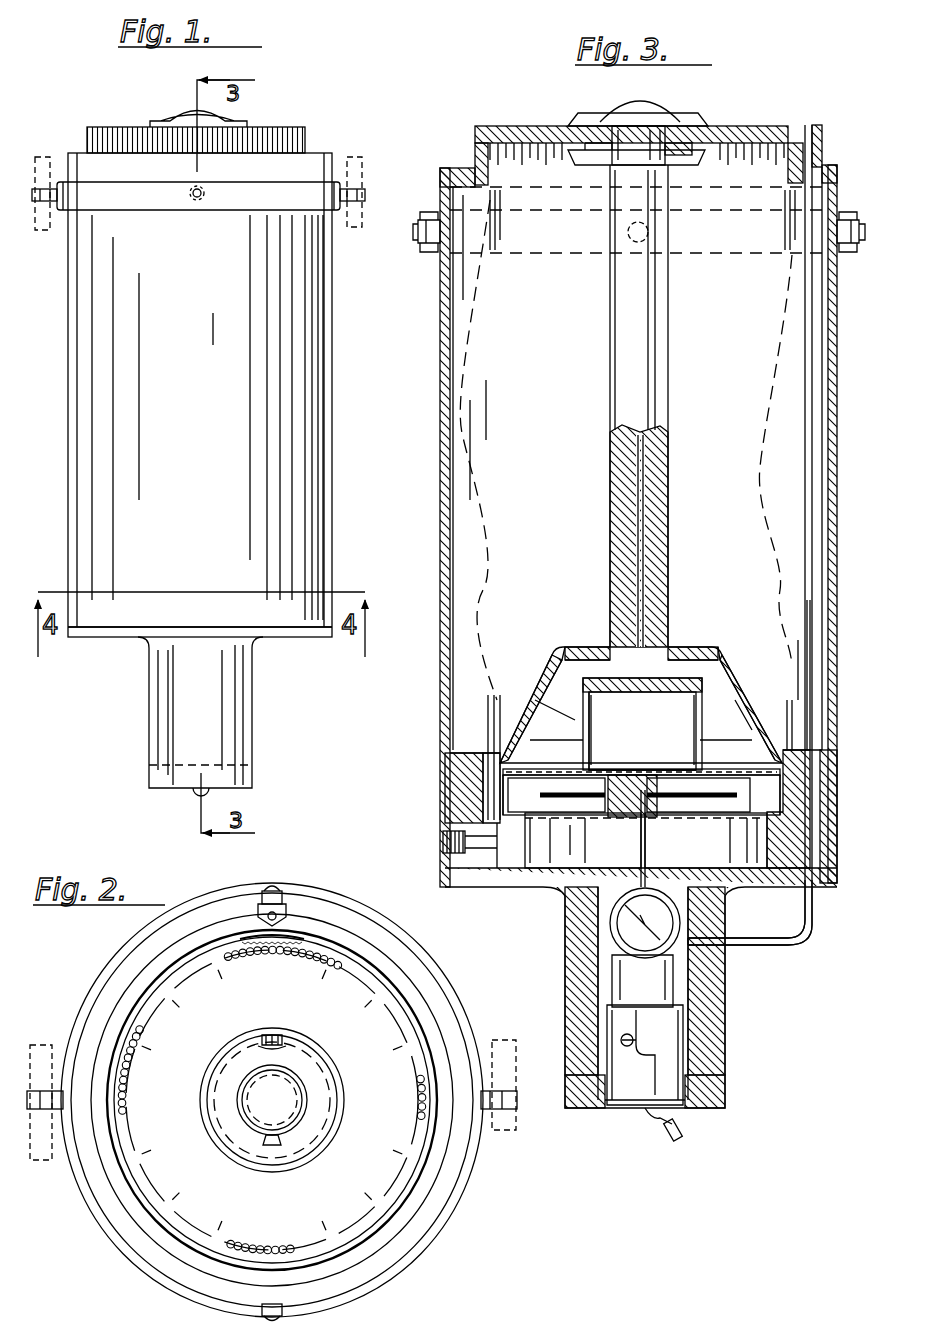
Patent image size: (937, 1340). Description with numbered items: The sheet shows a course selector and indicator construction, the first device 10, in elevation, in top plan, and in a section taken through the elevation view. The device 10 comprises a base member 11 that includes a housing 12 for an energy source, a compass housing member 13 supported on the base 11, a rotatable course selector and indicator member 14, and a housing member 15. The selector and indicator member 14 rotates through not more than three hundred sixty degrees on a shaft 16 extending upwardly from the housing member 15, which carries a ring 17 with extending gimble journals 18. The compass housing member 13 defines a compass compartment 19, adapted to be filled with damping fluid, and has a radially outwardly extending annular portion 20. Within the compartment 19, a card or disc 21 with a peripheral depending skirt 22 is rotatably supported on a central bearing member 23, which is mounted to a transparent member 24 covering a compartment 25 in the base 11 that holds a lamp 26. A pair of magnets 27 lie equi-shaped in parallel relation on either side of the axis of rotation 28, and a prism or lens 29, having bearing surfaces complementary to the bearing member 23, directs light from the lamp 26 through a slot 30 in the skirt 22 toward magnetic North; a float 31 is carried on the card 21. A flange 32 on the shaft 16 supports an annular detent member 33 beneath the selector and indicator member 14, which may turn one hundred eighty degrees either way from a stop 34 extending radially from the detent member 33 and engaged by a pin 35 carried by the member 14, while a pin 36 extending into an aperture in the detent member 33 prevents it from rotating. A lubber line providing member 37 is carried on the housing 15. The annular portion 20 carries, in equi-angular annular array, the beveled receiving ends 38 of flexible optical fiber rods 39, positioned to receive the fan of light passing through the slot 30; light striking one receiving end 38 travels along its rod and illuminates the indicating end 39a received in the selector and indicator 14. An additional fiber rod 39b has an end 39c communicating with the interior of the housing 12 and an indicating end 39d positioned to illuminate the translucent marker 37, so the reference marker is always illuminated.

In FIG. 1, the first device 10 is at (339, 124).
In FIG. 2, the first device 10 is at (104, 940).
In FIG. 3, the first device 10 is at (824, 108).
In FIG. 1, the base member 11 is at (130, 610).
In FIG. 3, the base member 11 is at (455, 778).
In FIG. 1, the housing for an energy source 12 is at (168, 705).
In FIG. 3, the housing for an energy source 12 is at (710, 998).
In FIG. 3, the compass housing member 13 is at (718, 652).
In FIG. 1, the rotatable course selector and indicator member 14 is at (272, 138).
In FIG. 2, the rotatable course selector and indicator member 14 is at (237, 1031).
In FIG. 3, the rotatable course selector and indicator member 14 is at (758, 128).
In FIG. 1, the housing member 15 is at (68, 375).
In FIG. 2, the housing member 15 is at (130, 1222).
In FIG. 3, the housing member 15 is at (445, 452).
In FIG. 3, the shaft 16 is at (640, 386).
In FIG. 1, the ring 17 is at (234, 202).
In FIG. 2, the ring 17 is at (100, 980).
In FIG. 3, the ring 17 is at (430, 252).
In FIG. 1, the gimble journals 18 is at (43, 189).
In FIG. 2, the gimble journals 18 is at (45, 1090).
In FIG. 3, the gimble journals 18 is at (632, 242).
In FIG. 3, the compass compartment 19 is at (712, 700).
In FIG. 3, the radially outwardly extending annular portion 20 is at (468, 752).
In FIG. 3, the card or disc 21 is at (523, 787).
In FIG. 3, the peripheral depending skirt 22 is at (552, 780).
In FIG. 3, the central bearing member 23 is at (647, 832).
In FIG. 3, the transparent member 24 is at (612, 873).
In FIG. 3, the compartment for a source of light energy 25 is at (603, 951).
In FIG. 3, the lamp 26 is at (663, 940).
In FIG. 3, the magnets 27 is at (641, 764).
In FIG. 3, the axis of rotation 28 is at (687, 778).
In FIG. 3, the prism or lens 29 is at (630, 823).
In FIG. 3, the slot 30 is at (760, 812).
In FIG. 3, the float 31 is at (585, 690).
In FIG. 3, the flange 32 is at (610, 160).
In FIG. 2, the annular detent member 33 is at (302, 1062).
In FIG. 3, the annular detent member 33 is at (660, 124).
In FIG. 2, the stop 34 is at (265, 1036).
In FIG. 3, the stop 34 is at (708, 150).
In FIG. 2, the pin 35 is at (289, 1048).
In FIG. 3, the pin 35 is at (703, 145).
In FIG. 2, the pin 36 is at (262, 1143).
In FIG. 3, the pin 36 is at (592, 155).
In FIG. 2, the reference or lubber line providing member 37 is at (286, 926).
In FIG. 3, the reference or lubber line providing member 37 is at (822, 133).
In FIG. 3, the beveled receiving ends 38 is at (490, 812).
In FIG. 2, the flexible optical fiber rods 39 is at (228, 937).
In FIG. 3, the flexible optical fiber rods 39 is at (492, 222).
In FIG. 2, the indicating end 39a is at (335, 958).
In FIG. 3, the indicating end 39a is at (492, 126).
In FIG. 3, the additional fiber rod 39b is at (812, 725).
In FIG. 3, the end 39c is at (690, 937).
In FIG. 2, the indicating end 39d is at (267, 921).
In FIG. 3, the indicating end 39d is at (817, 126).